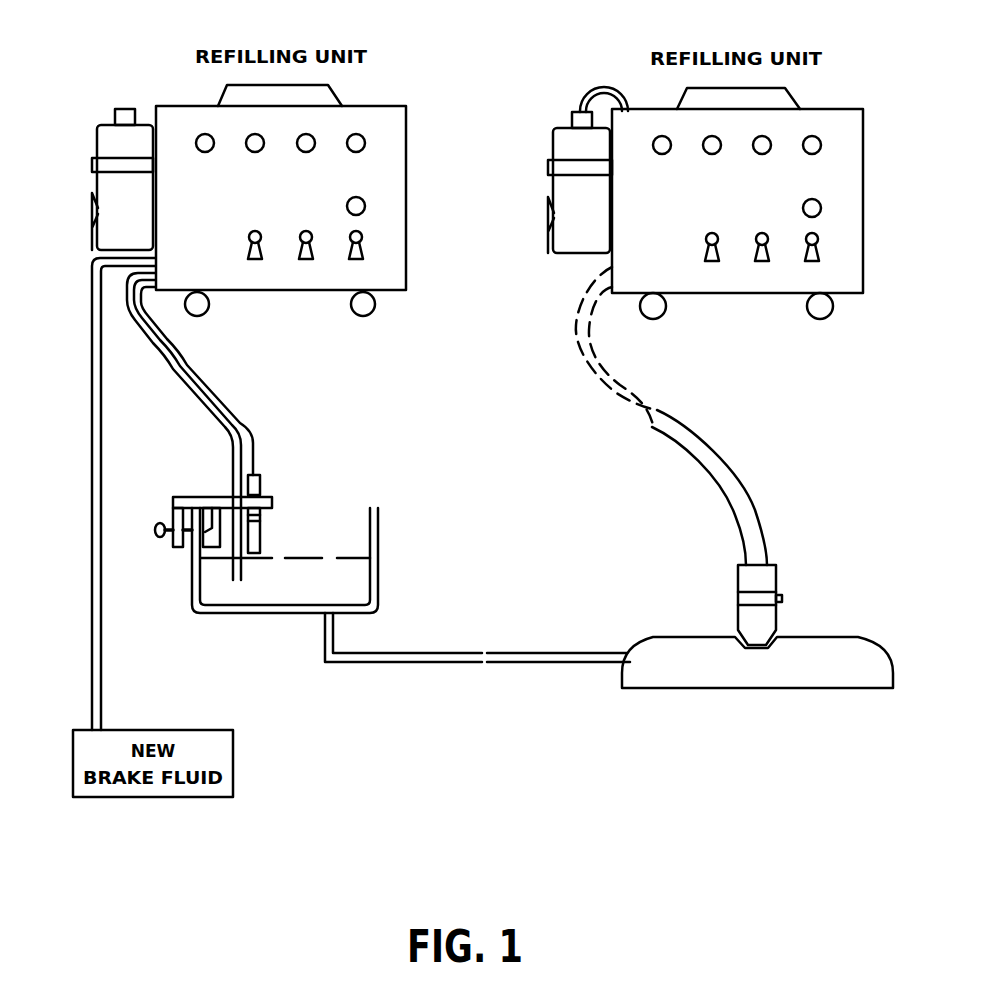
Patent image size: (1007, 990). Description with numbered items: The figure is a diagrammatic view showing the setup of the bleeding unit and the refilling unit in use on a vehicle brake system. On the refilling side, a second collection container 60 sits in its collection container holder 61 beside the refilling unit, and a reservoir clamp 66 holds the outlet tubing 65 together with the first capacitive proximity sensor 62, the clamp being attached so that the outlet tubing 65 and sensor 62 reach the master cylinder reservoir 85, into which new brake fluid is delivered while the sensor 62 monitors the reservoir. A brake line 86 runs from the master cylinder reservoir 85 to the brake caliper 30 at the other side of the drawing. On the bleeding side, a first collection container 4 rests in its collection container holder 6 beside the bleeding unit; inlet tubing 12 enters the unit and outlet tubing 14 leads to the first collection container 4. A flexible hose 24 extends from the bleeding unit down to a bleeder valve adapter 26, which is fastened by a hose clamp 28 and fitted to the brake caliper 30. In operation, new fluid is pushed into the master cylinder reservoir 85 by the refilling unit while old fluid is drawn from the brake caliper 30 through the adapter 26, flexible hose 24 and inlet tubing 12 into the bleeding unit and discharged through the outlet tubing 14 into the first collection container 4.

The first collection container 4 is at (550, 147).
The collection container holder 6 is at (550, 222).
The inlet tubing 12 is at (570, 347).
The outlet tubing 14 is at (585, 90).
The flexible hose 24 is at (727, 443).
The bleeder valve adapter 26 is at (782, 575).
The hose clamp 28 is at (728, 597).
The brake caliper 30 is at (828, 632).
The second collection container 60 is at (93, 144).
The collection container holder 61 is at (93, 220).
The first capacitive proximity sensor 62 is at (265, 479).
The outlet tubing 65 is at (225, 437).
The reservoir clamp 66 is at (170, 550).
The master cylinder reservoir 85 is at (392, 562).
The brake line 86 is at (357, 665).